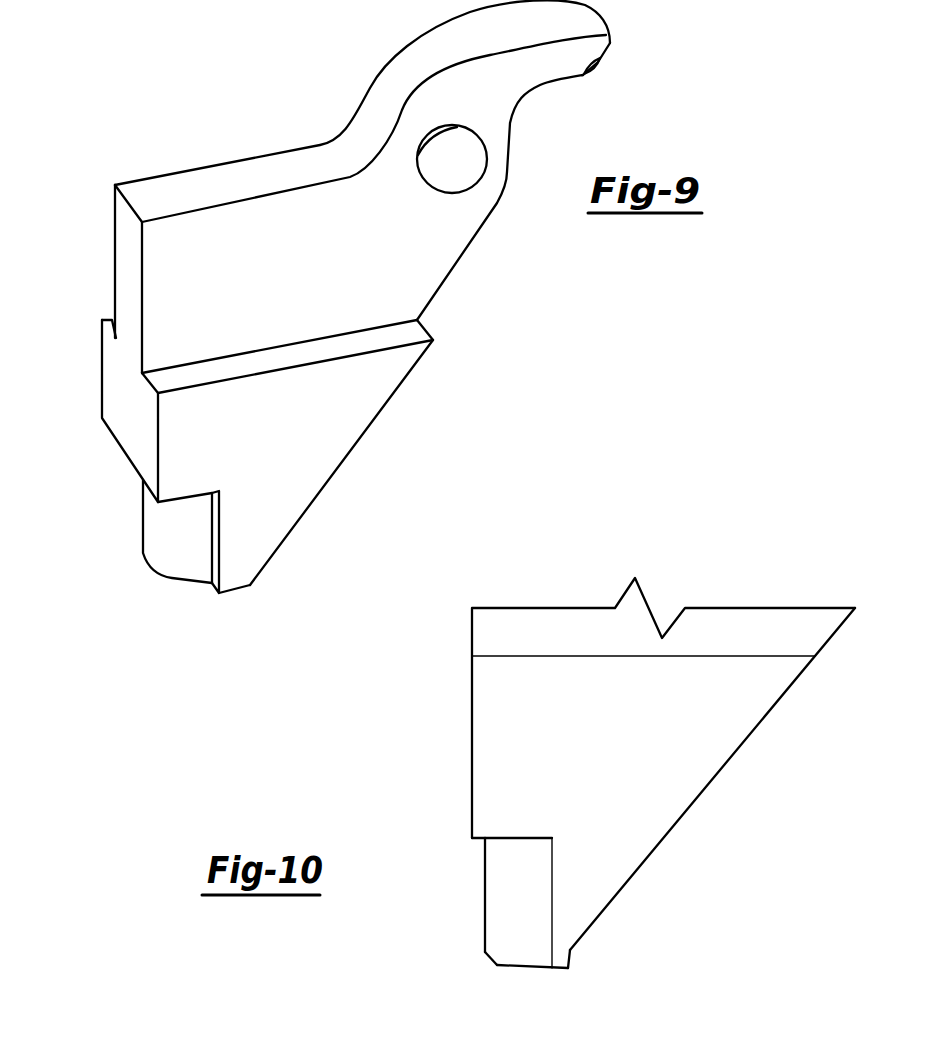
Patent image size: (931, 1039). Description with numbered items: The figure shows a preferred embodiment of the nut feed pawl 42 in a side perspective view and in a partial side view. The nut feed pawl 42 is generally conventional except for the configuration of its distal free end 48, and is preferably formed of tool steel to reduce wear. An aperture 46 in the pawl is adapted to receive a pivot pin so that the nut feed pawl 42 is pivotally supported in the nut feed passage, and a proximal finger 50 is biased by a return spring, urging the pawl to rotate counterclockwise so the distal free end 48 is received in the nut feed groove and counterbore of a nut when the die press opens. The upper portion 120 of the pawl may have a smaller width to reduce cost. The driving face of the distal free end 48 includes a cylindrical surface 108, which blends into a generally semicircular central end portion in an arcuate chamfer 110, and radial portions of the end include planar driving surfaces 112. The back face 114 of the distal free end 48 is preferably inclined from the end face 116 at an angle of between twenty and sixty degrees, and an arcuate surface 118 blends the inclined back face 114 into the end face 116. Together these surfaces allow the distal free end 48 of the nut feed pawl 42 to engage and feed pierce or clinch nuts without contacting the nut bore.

In FIG. 9, the nut feed pawl 42 is at (354, 309).
In FIG. 10, the nut feed pawl 42 is at (625, 789).
In FIG. 9, the aperture 46 is at (460, 163).
In FIG. 9, the distal free end 48 is at (361, 466).
In FIG. 10, the distal free end 48 is at (718, 788).
In FIG. 9, the proximal finger 50 is at (598, 43).
In FIG. 9, the cylindrical surface 108 is at (147, 549).
In FIG. 10, the cylindrical surface 108 is at (509, 932).
In FIG. 10, the arcuate chamfer 110 is at (498, 962).
In FIG. 9, the planar driving surfaces 112 is at (217, 553).
In FIG. 10, the planar driving surfaces 112 is at (550, 927).
In FIG. 9, the back face 114 is at (383, 407).
In FIG. 10, the back face 114 is at (765, 716).
In FIG. 10, the end face 116 is at (520, 970).
In FIG. 10, the arcuate surface 118 is at (573, 950).
In FIG. 9, the upper portion 120 is at (303, 270).
In FIG. 10, the upper portion 120 is at (565, 617).